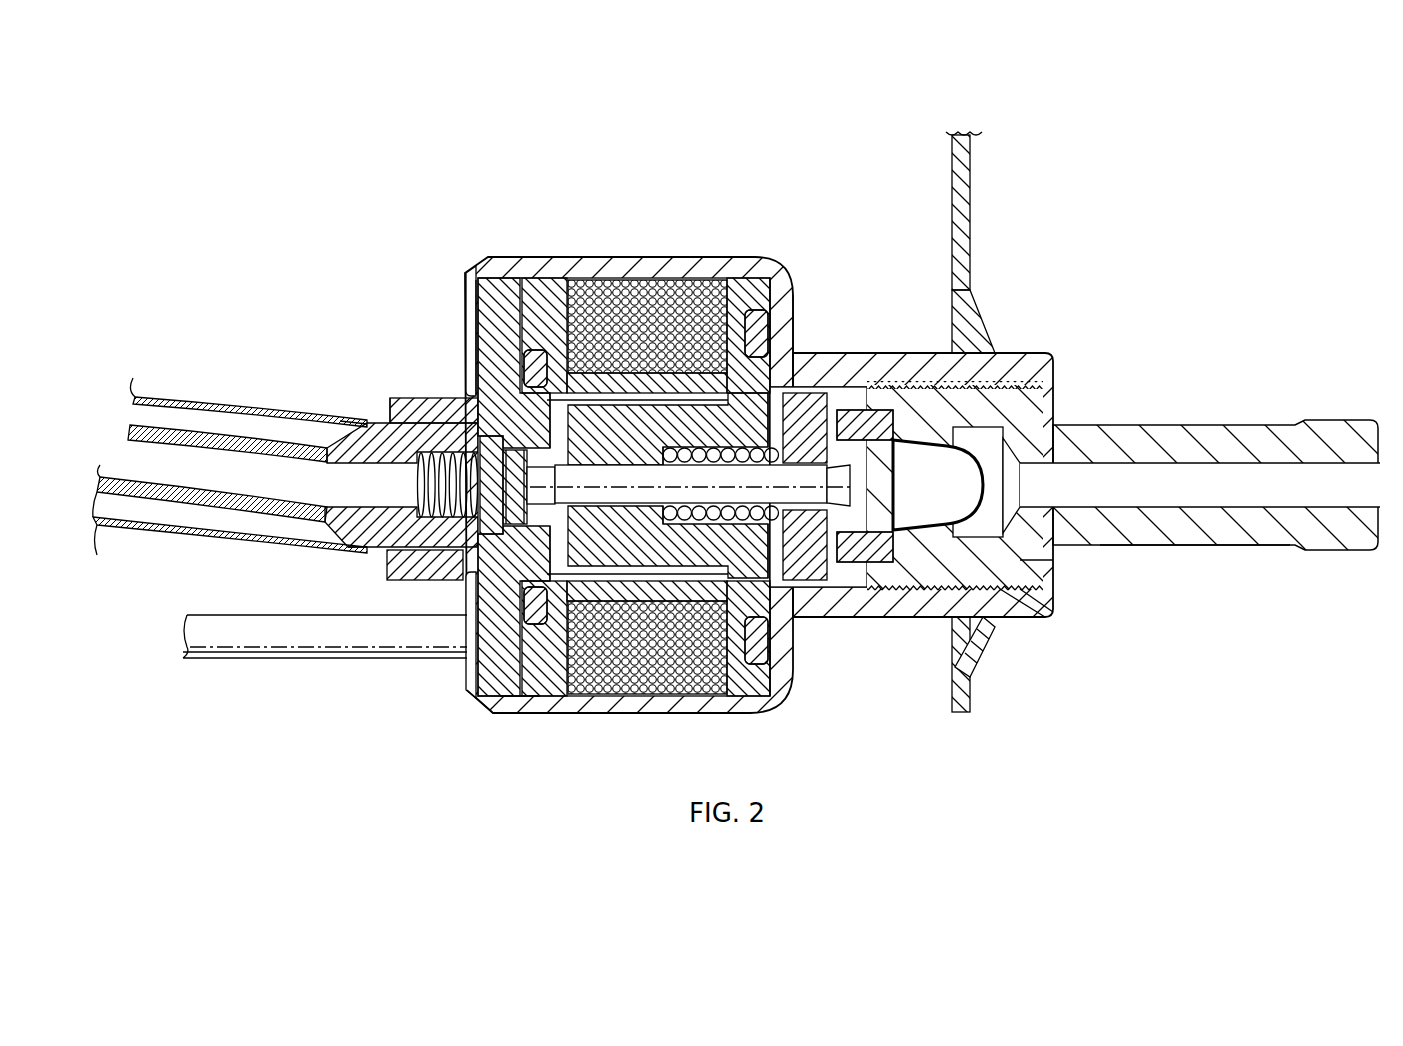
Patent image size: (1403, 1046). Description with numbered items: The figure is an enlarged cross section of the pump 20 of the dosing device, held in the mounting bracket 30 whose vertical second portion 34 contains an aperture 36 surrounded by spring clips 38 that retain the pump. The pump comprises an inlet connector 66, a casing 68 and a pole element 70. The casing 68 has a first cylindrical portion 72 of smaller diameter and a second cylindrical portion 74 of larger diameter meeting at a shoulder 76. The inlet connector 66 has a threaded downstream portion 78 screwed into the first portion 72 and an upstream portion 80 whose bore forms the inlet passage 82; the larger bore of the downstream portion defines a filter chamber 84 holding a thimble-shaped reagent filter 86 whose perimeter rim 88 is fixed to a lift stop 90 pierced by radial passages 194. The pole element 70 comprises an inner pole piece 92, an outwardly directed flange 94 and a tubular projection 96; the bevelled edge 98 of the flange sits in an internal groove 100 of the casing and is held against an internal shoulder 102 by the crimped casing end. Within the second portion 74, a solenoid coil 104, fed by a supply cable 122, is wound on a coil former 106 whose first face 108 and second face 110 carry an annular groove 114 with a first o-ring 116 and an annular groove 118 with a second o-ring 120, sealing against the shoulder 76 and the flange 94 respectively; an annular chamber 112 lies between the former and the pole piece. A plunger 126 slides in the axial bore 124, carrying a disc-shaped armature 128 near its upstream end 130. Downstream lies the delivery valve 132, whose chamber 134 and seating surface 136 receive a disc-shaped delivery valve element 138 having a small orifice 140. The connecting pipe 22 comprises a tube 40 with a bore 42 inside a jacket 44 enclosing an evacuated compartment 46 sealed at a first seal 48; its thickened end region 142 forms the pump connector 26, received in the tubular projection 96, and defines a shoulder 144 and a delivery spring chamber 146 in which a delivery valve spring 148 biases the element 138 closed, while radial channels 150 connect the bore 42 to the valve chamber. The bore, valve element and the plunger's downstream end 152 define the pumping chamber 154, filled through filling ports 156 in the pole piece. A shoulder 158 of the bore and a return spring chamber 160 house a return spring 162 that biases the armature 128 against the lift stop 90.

The pump 20 is at (782, 488).
The connecting pipe 22 is at (226, 453).
The pump connector 26 is at (400, 473).
The mounting bracket 30 is at (972, 416).
The second portion 34 is at (968, 212).
The aperture 36 is at (950, 640).
The spring clips 38 is at (985, 648).
The tube 40 is at (172, 412).
The bore 42 is at (168, 487).
The jacket 44 is at (117, 528).
The compartment 46 is at (232, 420).
The first seal 48 is at (355, 418).
The inlet connector 66 is at (1201, 473).
The casing 68 is at (764, 491).
The pole element 70 is at (637, 491).
The first cylindrical portion 72 is at (946, 477).
The second cylindrical portion 74 is at (603, 262).
The shoulder 76 is at (798, 320).
The downstream portion 78 is at (1055, 565).
The upstream portion 80 is at (1245, 540).
The inlet passage 82 is at (1258, 460).
The filter chamber 84 is at (1035, 425).
The reagent filter 86 is at (1000, 390).
The perimeter rim 88 is at (1050, 600).
The lift stop 90 is at (835, 582).
The inner pole piece 92 is at (837, 440).
The flange 94 is at (505, 700).
The tubular projection 96 is at (400, 398).
The bevelled edge 98 is at (477, 265).
The internal groove 100 is at (490, 702).
The internal shoulder 102 is at (515, 702).
The solenoid coil 104 is at (670, 672).
The coil former 106 is at (752, 265).
The first face 108 is at (740, 290).
The second face 110 is at (545, 280).
The annular chamber 112 is at (690, 330).
The annular groove 114 is at (790, 612).
The first o-ring 116 is at (778, 665).
The annular groove 118 is at (580, 620).
The second o-ring 120 is at (548, 690).
The supply cable 122 is at (230, 648).
The axial bore 124 is at (640, 400).
The plunger 126 is at (562, 430).
The armature 128 is at (820, 600).
The upstream end 130 is at (880, 490).
The delivery valve 132 is at (470, 585).
The delivery valve chamber 134 is at (490, 350).
The seating surface 136 is at (470, 620).
The delivery valve element 138 is at (488, 385).
The orifice 140 is at (462, 622).
The end region 142 is at (345, 545).
The shoulder 144 is at (385, 467).
The delivery spring chamber 146 is at (390, 560).
The delivery valve spring 148 is at (430, 488).
The radial channels 150 is at (440, 400).
The downstream end 152 is at (590, 478).
The pumping chamber 154 is at (618, 595).
The filling ports 156 is at (490, 370).
The shoulder 158 is at (700, 505).
The return spring chamber 160 is at (715, 645).
The return spring 162 is at (837, 522).
The radial passages 194 is at (865, 380).